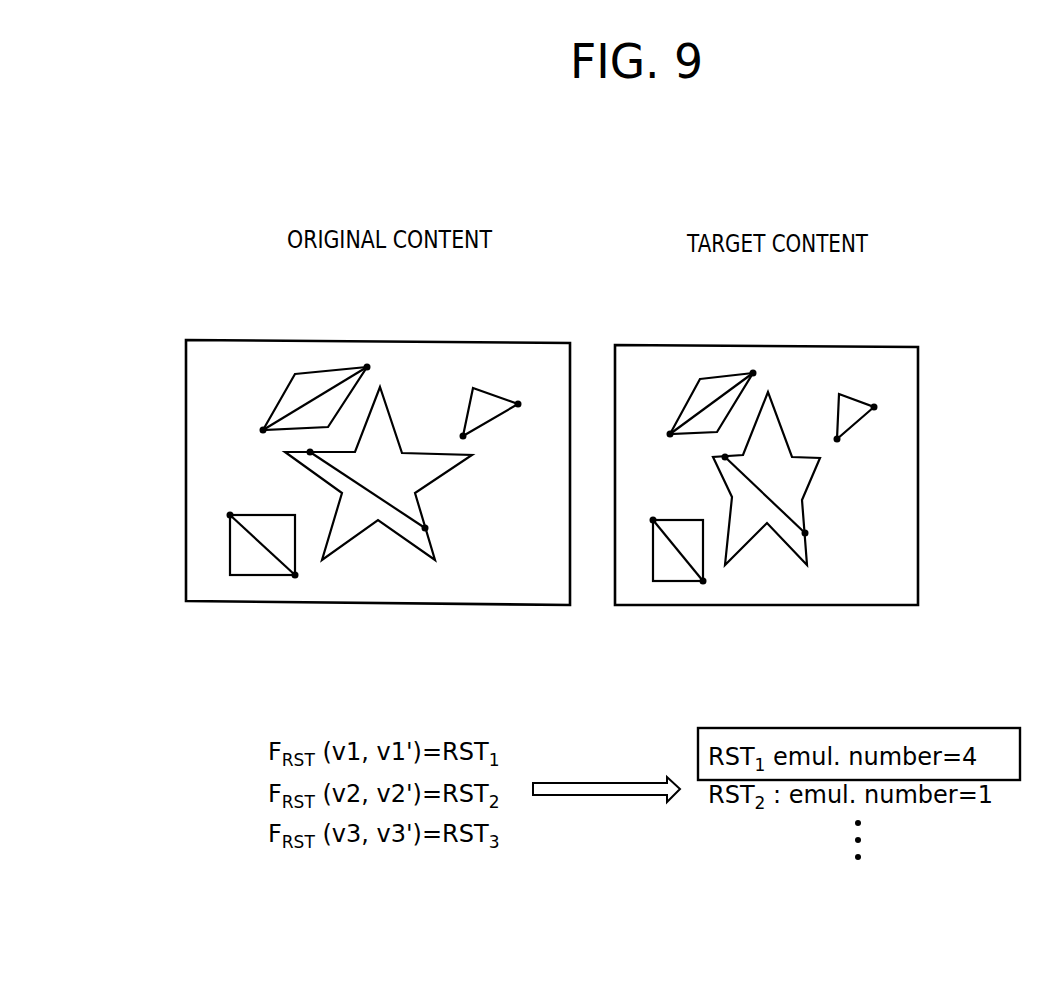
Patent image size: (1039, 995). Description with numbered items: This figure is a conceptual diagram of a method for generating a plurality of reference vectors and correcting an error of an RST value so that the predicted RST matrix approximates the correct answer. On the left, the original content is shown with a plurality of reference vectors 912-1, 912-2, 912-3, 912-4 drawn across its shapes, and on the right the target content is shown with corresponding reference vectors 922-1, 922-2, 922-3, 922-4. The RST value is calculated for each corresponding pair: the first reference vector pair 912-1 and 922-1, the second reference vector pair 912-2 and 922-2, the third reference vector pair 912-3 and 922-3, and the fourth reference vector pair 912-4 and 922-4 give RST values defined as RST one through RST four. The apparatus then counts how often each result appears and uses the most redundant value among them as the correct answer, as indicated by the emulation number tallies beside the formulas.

The reference vector 912-1 is at (400, 510).
The reference vector 912-2 is at (323, 390).
The reference vector 912-3 is at (506, 403).
The reference vector 912-4 is at (273, 557).
The reference vector 922-1 is at (787, 515).
The reference vector 922-2 is at (713, 395).
The reference vector 922-3 is at (860, 410).
The reference vector 922-4 is at (682, 562).